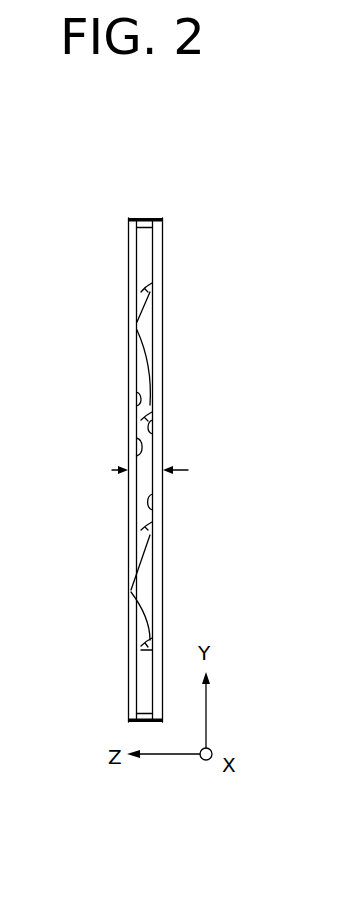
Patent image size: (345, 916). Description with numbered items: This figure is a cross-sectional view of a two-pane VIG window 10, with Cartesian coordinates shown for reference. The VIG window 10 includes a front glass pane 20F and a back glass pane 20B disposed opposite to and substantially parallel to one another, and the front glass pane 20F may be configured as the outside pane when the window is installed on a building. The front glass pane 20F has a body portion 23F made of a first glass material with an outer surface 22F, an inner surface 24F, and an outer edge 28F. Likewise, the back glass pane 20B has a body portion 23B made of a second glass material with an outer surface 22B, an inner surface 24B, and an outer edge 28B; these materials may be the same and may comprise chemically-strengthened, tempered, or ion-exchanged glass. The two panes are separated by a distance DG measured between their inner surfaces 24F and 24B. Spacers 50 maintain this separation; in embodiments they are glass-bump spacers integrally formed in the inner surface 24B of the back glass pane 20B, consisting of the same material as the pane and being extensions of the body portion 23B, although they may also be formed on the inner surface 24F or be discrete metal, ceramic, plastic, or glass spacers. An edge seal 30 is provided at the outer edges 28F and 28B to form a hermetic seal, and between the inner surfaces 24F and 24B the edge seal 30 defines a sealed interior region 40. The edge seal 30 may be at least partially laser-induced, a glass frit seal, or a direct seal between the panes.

The VIG window 10 is at (122, 165).
The front glass pane 20F is at (126, 258).
The back glass pane 20B is at (174, 253).
The outer edge 28F is at (128, 219).
The outer edge 28B is at (163, 219).
The outer surface 22F is at (129, 506).
The outer surface 22B is at (163, 381).
The body portion 23F is at (131, 396).
The body portion 23B is at (160, 426).
The inner surface 24F is at (134, 437).
The inner surface 24B is at (162, 498).
The edge seal 30 is at (147, 222).
The sealed interior region 40 is at (159, 338).
The spacers 50 is at (131, 393).
The distance DG is at (188, 470).